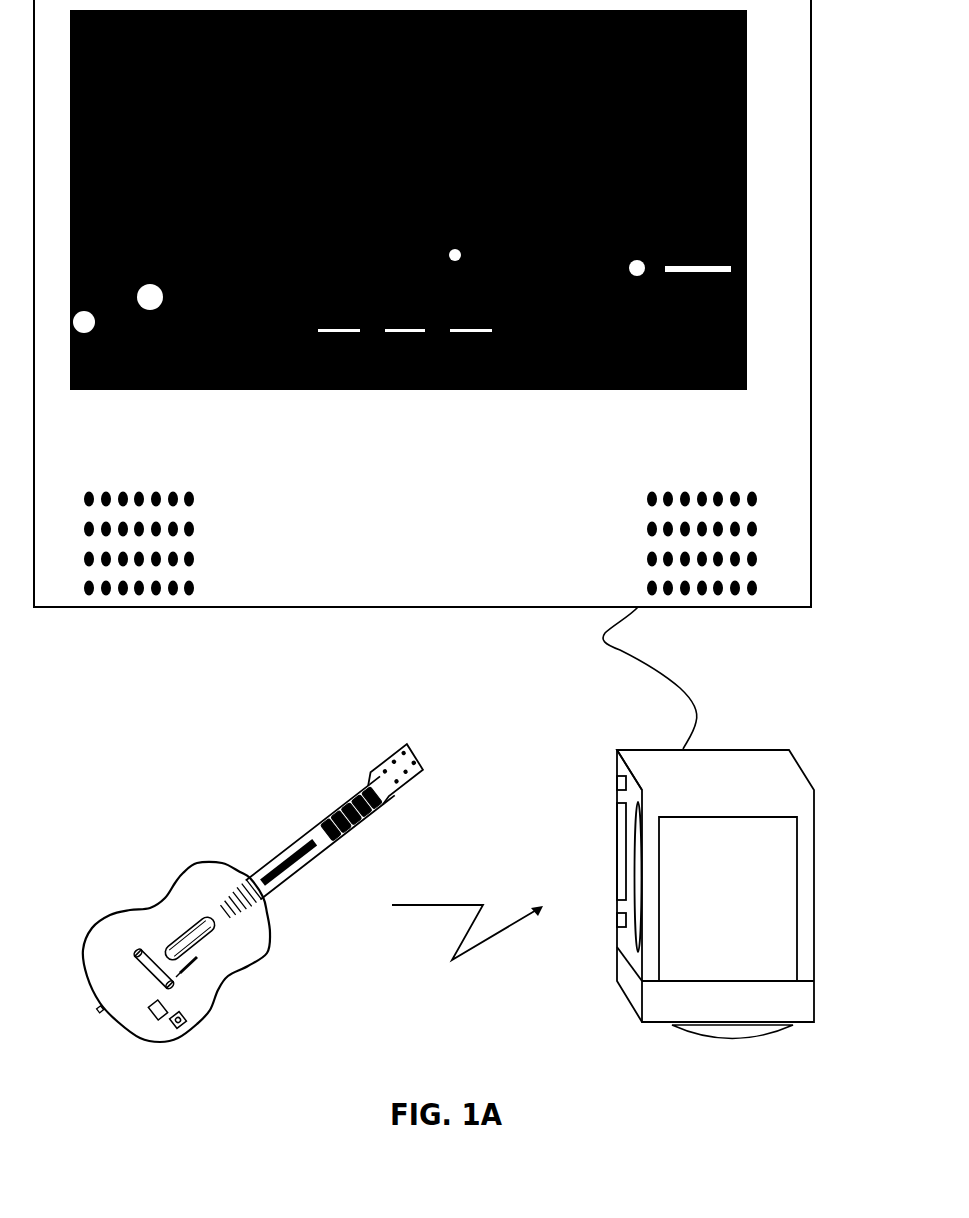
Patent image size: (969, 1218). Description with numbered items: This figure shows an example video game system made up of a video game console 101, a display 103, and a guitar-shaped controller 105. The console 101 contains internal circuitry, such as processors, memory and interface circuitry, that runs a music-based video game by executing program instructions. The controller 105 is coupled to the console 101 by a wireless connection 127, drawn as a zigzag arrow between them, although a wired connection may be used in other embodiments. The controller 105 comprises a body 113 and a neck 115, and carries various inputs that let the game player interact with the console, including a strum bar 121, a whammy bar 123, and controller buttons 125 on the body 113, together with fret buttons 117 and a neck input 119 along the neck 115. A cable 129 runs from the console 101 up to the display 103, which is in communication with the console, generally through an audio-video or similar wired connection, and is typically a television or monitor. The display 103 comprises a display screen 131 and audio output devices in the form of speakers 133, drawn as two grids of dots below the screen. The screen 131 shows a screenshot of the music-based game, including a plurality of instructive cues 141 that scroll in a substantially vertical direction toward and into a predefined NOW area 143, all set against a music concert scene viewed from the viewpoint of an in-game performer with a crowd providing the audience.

The video game console 101 is at (775, 1040).
The display 103 is at (435, 607).
The controller 105 is at (258, 960).
The body 113 is at (185, 870).
The neck 115 is at (323, 840).
The fret buttons 117 is at (360, 800).
The neck input 119 is at (278, 857).
The strum bar 121 is at (188, 932).
The whammy bar 123 is at (195, 958).
The controller buttons 125 is at (155, 973).
The wireless connection 127 is at (467, 950).
The cable 129 is at (678, 682).
The display screen 131 is at (747, 257).
The speaker 133 is at (193, 529).
The instructive cues 141 is at (457, 203).
The NOW area 143 is at (403, 346).